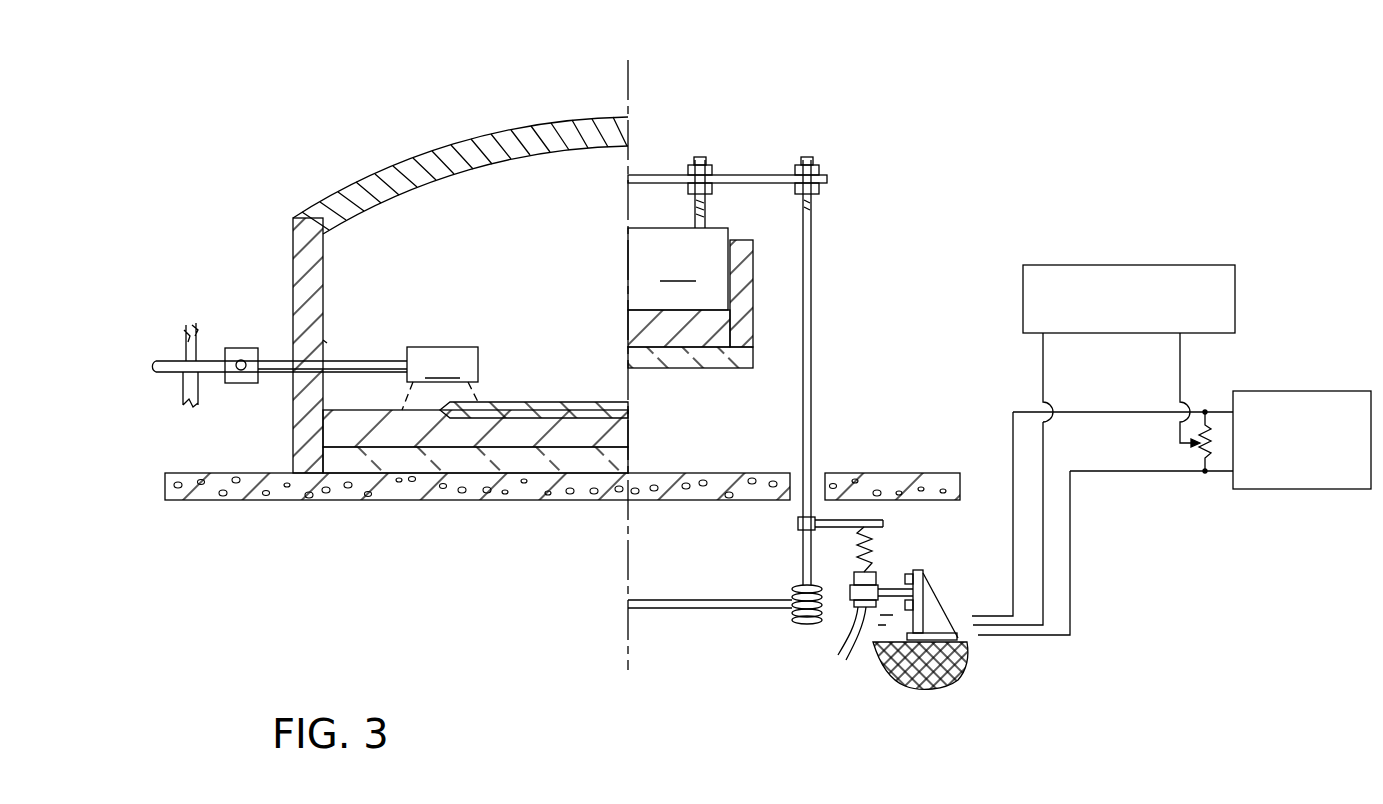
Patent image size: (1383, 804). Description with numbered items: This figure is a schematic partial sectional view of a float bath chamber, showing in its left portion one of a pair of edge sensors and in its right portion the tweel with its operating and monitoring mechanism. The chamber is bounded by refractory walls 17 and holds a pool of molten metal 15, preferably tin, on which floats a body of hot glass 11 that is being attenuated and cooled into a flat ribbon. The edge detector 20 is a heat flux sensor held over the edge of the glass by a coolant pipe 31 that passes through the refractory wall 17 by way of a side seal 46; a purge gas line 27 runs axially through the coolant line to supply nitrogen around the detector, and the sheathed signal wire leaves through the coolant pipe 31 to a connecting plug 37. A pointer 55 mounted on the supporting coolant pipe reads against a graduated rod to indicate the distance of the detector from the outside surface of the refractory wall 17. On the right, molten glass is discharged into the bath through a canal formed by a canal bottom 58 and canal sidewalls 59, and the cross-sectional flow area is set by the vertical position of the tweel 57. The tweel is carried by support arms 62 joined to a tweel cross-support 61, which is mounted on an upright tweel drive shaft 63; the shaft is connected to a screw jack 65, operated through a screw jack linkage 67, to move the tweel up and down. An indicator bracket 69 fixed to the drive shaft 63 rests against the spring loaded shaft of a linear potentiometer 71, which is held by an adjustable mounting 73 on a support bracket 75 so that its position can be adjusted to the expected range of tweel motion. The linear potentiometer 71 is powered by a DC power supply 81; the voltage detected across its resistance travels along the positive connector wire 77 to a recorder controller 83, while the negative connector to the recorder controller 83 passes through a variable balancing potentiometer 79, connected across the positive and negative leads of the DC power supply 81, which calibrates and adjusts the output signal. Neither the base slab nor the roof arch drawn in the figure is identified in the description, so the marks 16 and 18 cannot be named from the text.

The body of hot glass 11 is at (598, 402).
The pool of molten metal 15 is at (335, 427).
The base slab 16 is at (411, 476).
The refractory wall 17 is at (293, 282).
The furnace roof arch 18 is at (460, 142).
The edge detector 20 is at (440, 378).
The purge gas line 27 is at (183, 387).
The coolant pipe 31 is at (384, 361).
The connecting plug 37 is at (185, 352).
The side seal 46 is at (333, 337).
The pointer 55 is at (241, 348).
The tweel 57 is at (678, 269).
The canal bottom 58 is at (670, 357).
The canal sidewall 59 is at (755, 345).
The tweel cross-support 61 is at (655, 181).
The support arm 62 is at (706, 215).
The upright tweel drive shaft 63 is at (815, 285).
The screw jack 65 is at (792, 595).
The screw jack linkage 67 is at (700, 610).
The indicator bracket 69 is at (885, 523).
The linear potentiometer 71 is at (855, 575).
The adjustable mounting 73 is at (895, 590).
The support bracket 75 is at (928, 588).
The positive connector wire 77 is at (1088, 575).
The variable balancing potentiometer 79 is at (1212, 388).
The DC power supply 81 is at (1305, 391).
The recorder controller 83 is at (1147, 265).